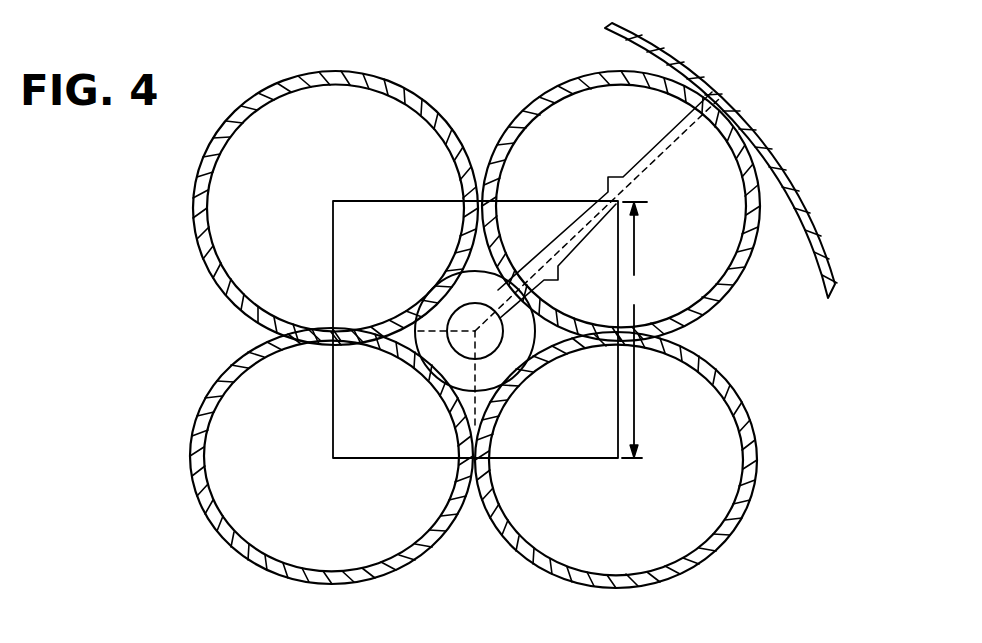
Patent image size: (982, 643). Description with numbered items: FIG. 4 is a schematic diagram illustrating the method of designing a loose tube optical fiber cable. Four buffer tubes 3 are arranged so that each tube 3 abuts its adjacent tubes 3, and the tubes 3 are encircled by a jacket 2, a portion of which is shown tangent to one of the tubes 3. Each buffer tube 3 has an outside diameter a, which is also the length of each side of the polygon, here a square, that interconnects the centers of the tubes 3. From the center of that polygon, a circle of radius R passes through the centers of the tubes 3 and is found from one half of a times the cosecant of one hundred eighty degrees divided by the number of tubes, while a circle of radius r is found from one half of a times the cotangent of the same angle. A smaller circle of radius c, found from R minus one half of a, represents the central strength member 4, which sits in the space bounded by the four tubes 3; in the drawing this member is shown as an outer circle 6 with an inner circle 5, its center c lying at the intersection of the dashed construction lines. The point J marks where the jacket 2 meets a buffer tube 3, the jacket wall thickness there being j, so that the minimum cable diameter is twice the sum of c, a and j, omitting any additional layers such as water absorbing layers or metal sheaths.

The jacket 2 is at (771, 148).
The buffer tube 3 is at (196, 184).
The central strength member 4 is at (493, 327).
The inner bore 5 is at (470, 308).
The tube wall 6 is at (522, 348).
The outside diameter of a buffer tube a is at (605, 198).
The radius R is at (558, 261).
The radius r is at (472, 393).
The radius of the central strength member c is at (435, 331).
The wall thickness of a jacket J is at (717, 97).